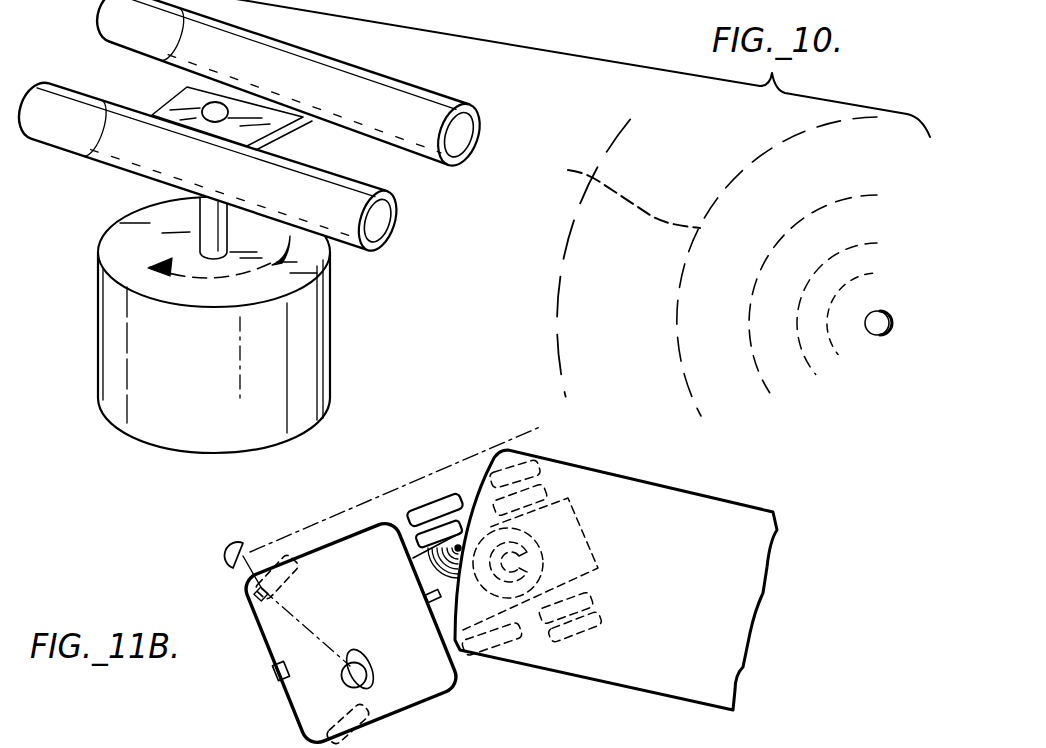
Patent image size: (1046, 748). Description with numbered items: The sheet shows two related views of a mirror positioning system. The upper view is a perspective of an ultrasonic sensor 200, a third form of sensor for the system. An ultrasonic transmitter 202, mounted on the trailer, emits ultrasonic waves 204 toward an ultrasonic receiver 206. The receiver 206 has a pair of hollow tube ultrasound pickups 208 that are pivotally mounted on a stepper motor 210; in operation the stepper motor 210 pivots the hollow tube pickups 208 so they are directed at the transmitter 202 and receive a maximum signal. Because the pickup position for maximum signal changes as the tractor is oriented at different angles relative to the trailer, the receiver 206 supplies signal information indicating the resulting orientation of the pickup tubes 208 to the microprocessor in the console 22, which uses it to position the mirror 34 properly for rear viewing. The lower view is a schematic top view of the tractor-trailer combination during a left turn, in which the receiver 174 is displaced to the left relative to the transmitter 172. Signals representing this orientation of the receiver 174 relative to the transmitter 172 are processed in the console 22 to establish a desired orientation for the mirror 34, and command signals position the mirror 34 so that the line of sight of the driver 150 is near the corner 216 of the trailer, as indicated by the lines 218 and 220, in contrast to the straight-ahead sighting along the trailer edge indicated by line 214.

In FIG. 10, the ultrasonic sensor 200 is at (580, 208).
In FIG. 10, the ultrasonic transmitter 202 is at (877, 336).
In FIG. 10, the ultrasonic waves 204 is at (580, 173).
In FIG. 10, the ultrasonic receiver 206 is at (190, 100).
In FIG. 10, the hollow tube ultrasound pickups 208 is at (427, 163).
In FIG. 10, the stepper motor 210 is at (110, 287).
In FIG. 11B, the console 22 is at (275, 671).
In FIG. 11B, the mirror 34 is at (230, 556).
In FIG. 11B, the driver 150 is at (367, 673).
In FIG. 11B, the transmitter 172 is at (413, 570).
In FIG. 11B, the receiver 174 is at (427, 591).
In FIG. 11B, the line 214 is at (520, 740).
In FIG. 11B, the corner 216 is at (500, 452).
In FIG. 11B, the line 218 is at (302, 580).
In FIG. 11B, the line 220 is at (366, 498).